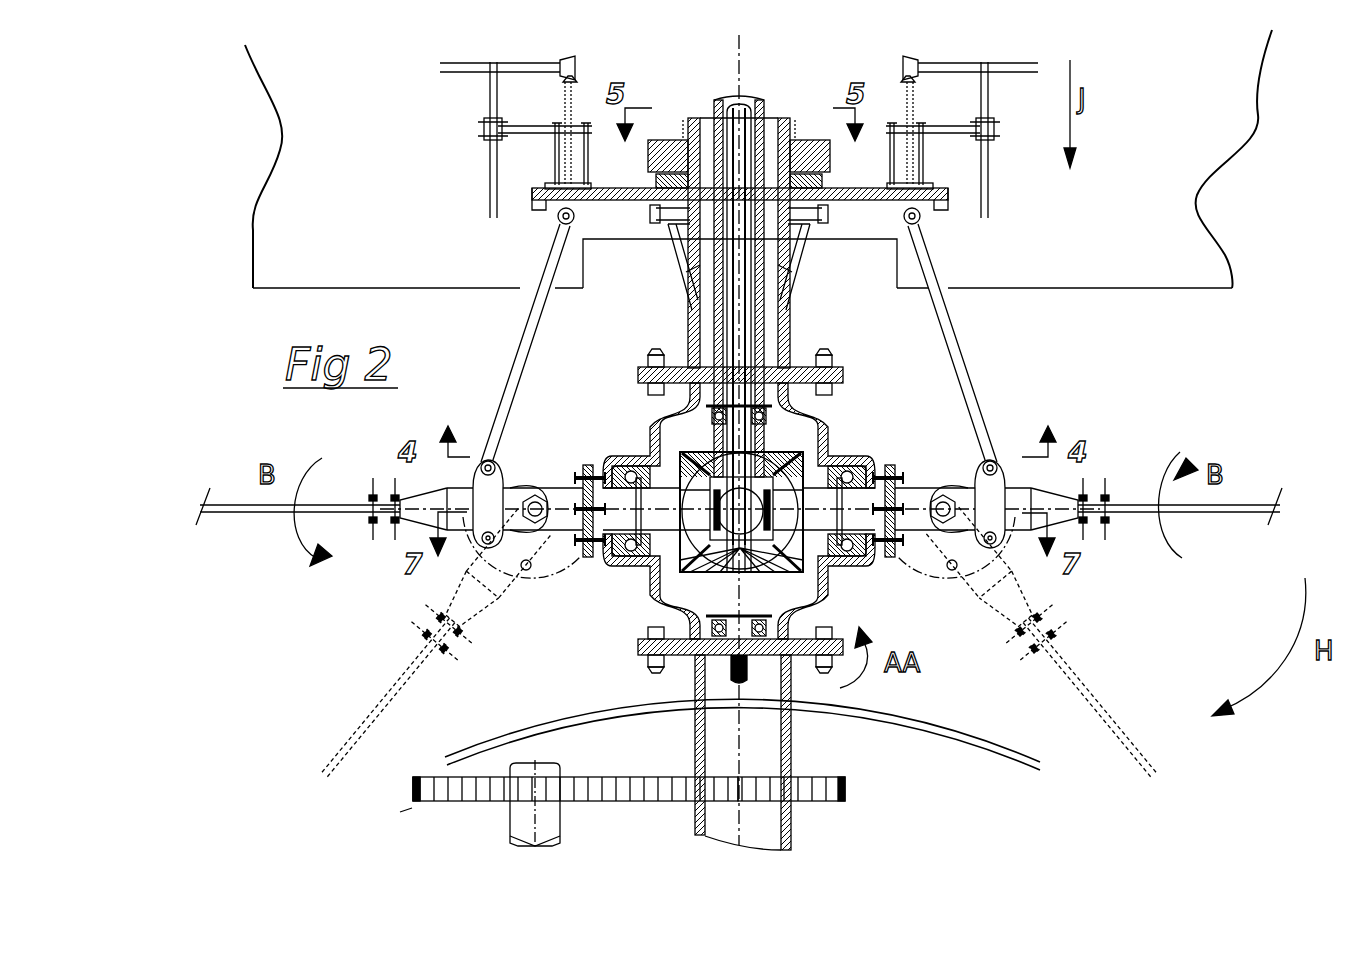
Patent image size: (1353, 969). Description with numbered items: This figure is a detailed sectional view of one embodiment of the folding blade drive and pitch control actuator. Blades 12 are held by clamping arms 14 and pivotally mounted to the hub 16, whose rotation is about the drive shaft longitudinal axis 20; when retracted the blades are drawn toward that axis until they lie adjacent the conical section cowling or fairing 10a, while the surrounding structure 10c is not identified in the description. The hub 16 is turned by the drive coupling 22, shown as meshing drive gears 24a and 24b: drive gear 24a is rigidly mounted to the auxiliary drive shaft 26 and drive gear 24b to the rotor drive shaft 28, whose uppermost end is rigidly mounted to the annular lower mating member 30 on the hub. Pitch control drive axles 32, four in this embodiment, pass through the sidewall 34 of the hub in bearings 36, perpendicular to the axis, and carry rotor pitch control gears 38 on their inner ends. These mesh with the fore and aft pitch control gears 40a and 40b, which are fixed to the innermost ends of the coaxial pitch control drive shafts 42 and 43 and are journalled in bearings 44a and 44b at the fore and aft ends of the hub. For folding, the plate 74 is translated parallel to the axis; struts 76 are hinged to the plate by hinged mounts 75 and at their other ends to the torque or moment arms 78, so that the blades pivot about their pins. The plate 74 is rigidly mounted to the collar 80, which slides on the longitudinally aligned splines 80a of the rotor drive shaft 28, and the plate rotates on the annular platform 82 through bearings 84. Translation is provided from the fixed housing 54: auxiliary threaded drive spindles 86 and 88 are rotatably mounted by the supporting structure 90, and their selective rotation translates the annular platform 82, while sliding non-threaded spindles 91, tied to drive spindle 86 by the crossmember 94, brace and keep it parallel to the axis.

The conical section cowling or fairing 10a is at (904, 722).
The upper vessel wall 10c is at (1128, 258).
The blades 12 is at (250, 513).
The clamping arms 14 is at (447, 500).
The hub 16 is at (842, 610).
The drive shaft longitudinal axis 20 is at (760, 848).
The drive coupling 22 is at (400, 812).
The drive gear 24a is at (622, 782).
The drive gear 24b is at (705, 772).
The auxiliary drive shaft 26 is at (512, 808).
The rotor drive shaft 28 is at (788, 355).
The annular lower mating member 30 is at (820, 632).
The pitch control drive axles 32 is at (608, 500).
The sidewall 34 is at (860, 478).
The bearings 36 is at (873, 495).
The rotor pitch control gears 38 is at (822, 446).
The fore pitch control gear 40a is at (706, 448).
The aft pitch control gear 40b is at (685, 580).
The coaxial pitch control drive shaft 42 is at (768, 100).
The coaxial pitch control drive shaft 43 is at (748, 108).
The bearing 44a is at (772, 386).
The bearing 44b is at (712, 628).
The housing 54 is at (992, 150).
The plate 74 is at (556, 226).
The hinged mounts 75 is at (922, 218).
The struts 76 is at (1012, 398).
The torque or moment arms 78 is at (483, 460).
The collar 80 is at (652, 208).
The longitudinally aligned splines 80a is at (800, 245).
The annular platform 82 is at (540, 187).
The bearings 84 is at (597, 187).
The auxiliary threaded drive spindle 86 is at (911, 120).
The auxiliary threaded drive spindle 88 is at (948, 73).
The supporting structure 90 is at (945, 130).
The sliding non-threaded spindles 91 is at (930, 155).
The crossmember 94 is at (940, 186).